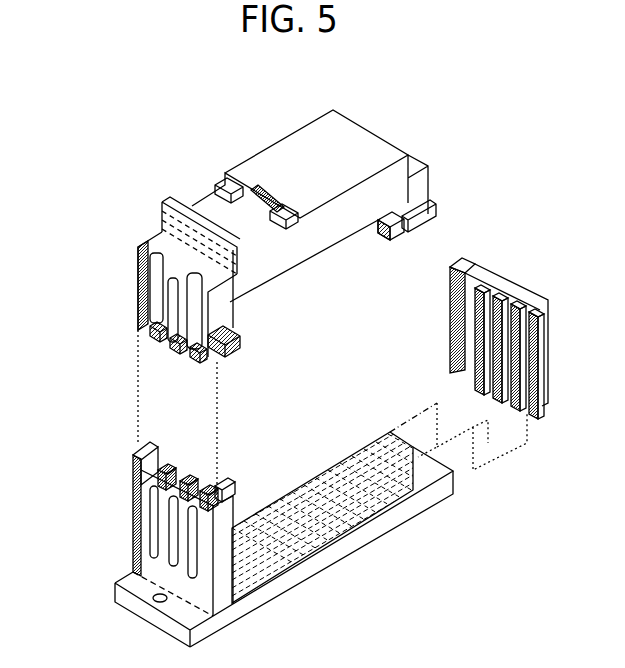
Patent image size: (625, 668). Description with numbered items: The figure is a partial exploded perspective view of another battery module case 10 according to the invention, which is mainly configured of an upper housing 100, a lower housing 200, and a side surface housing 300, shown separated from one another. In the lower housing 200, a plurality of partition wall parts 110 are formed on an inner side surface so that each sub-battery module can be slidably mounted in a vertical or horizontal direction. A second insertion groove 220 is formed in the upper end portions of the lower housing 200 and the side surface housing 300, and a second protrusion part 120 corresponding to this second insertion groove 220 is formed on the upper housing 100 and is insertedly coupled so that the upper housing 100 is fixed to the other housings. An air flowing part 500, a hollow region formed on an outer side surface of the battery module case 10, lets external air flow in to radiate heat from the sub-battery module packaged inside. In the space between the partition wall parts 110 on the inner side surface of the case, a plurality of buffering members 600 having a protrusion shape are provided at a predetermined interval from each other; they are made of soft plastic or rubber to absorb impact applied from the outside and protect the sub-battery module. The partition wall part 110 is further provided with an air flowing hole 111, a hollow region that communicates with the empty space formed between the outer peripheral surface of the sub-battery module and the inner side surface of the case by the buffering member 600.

The battery module case 10 is at (92, 172).
The upper housing 100 is at (283, 150).
The partition wall part 110 is at (382, 528).
The air flowing hole 111 is at (312, 565).
The second protrusion part 120 is at (152, 334).
The lower housing 200 is at (141, 517).
The second insertion groove 220 is at (140, 478).
The side surface housing 300 is at (460, 254).
The air flowing part 500 is at (154, 548).
The buffering member 600 is at (354, 548).